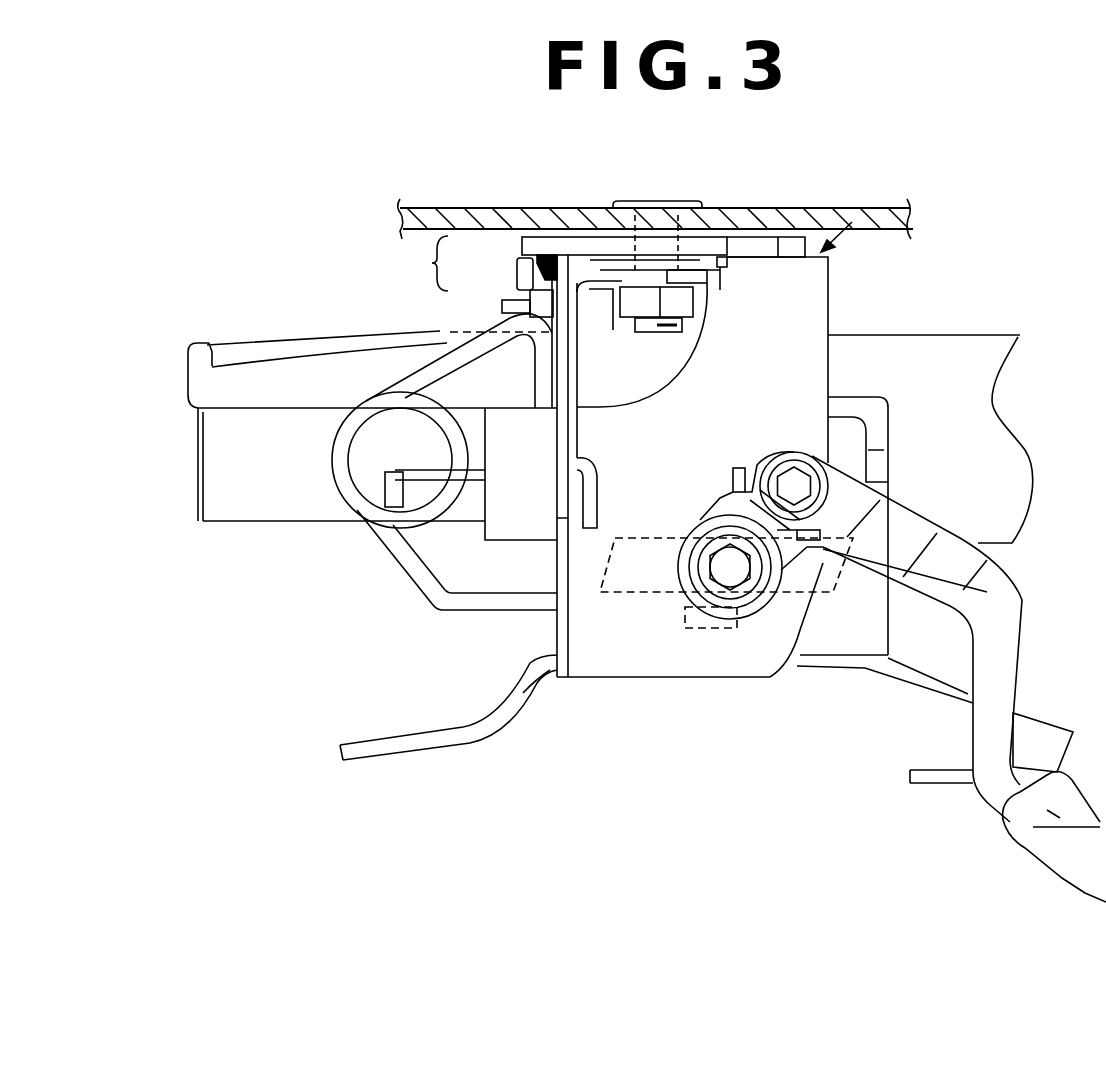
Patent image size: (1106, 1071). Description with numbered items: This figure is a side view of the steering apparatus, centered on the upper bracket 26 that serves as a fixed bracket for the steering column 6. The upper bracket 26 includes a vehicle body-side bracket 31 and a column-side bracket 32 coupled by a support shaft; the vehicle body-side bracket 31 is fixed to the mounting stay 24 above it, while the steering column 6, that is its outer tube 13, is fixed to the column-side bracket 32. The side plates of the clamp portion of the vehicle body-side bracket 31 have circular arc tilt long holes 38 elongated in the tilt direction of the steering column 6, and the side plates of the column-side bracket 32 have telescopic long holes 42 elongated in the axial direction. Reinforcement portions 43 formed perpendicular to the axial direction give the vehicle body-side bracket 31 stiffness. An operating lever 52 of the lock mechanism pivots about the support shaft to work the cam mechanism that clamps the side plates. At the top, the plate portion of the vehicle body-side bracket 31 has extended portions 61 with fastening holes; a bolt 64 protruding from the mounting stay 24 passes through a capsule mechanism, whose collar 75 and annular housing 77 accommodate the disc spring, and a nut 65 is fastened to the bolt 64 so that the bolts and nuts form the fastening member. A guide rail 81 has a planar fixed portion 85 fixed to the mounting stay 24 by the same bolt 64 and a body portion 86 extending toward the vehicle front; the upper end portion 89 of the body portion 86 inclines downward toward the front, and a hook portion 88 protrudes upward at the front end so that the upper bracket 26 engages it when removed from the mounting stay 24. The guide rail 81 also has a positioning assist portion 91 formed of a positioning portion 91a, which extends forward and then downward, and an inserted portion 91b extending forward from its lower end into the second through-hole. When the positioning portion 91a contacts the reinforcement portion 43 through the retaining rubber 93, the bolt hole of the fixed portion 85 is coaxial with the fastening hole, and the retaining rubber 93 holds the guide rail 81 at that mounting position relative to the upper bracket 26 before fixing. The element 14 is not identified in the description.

The steering column 6 is at (1017, 330).
The outer tube 13 is at (955, 340).
The spring member 14 is at (247, 352).
The mounting stay 24 is at (808, 222).
The upper bracket 26 is at (852, 222).
The vehicle body-side bracket 31 is at (830, 268).
The column-side bracket 32 is at (888, 648).
The tilt long hole 38 is at (733, 490).
The telescopic long hole 42 is at (628, 592).
The reinforcement portion 43 is at (557, 500).
The operating lever 52 is at (1023, 630).
The extended portion 61 is at (702, 268).
The bolt 64 is at (658, 206).
The nut 65 is at (630, 318).
The collar 75 is at (683, 333).
The housing 77 is at (580, 280).
The guide rail 81 is at (757, 236).
The fixed portion 85 is at (707, 295).
The body portion 86 is at (447, 342).
The hook portion 88 is at (197, 347).
The upper end portion 89 is at (322, 362).
The positioning assist portion 91 is at (475, 322).
The positioning portion 91a is at (535, 275).
The inserted portion 91b is at (525, 298).
The retaining rubber 93 is at (560, 256).